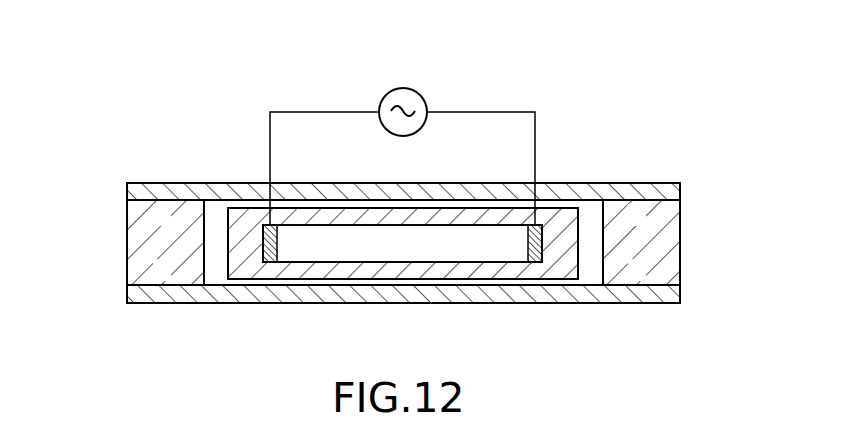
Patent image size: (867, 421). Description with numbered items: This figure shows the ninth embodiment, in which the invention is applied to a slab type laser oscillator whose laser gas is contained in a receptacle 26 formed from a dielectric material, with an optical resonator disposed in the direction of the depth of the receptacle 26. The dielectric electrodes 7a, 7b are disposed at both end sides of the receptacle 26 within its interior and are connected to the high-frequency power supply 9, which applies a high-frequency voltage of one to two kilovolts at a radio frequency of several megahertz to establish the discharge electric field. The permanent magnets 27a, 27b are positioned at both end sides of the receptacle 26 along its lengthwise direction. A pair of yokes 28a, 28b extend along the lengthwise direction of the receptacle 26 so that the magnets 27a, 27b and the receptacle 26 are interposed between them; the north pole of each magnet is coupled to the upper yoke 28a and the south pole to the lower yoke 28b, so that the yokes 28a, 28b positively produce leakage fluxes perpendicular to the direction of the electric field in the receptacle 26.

The high-frequency power supply 9 is at (423, 90).
The upper yoke 28a is at (406, 183).
The lower yoke 28b is at (373, 303).
The permanent magnet 27a is at (681, 236).
The permanent magnet 27b is at (127, 254).
The receptacle 26 is at (440, 243).
The dielectric electrode 7a is at (280, 239).
The dielectric electrode 7b is at (527, 246).